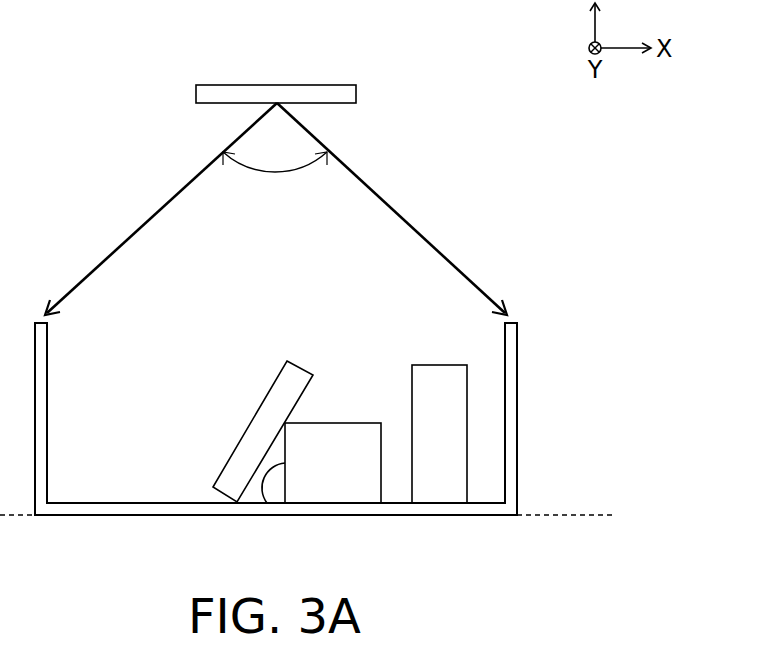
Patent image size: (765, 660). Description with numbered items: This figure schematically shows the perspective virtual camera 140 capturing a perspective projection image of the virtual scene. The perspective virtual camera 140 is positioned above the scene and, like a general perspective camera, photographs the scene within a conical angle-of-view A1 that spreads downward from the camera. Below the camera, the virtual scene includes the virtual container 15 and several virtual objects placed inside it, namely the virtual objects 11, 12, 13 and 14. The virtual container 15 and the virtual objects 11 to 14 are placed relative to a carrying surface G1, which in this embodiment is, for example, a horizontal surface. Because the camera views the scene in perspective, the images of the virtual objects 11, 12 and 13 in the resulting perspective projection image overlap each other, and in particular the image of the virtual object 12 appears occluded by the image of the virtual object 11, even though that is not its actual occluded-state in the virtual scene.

The perspective virtual camera 140 is at (340, 93).
The conical angle-of-view A1 is at (275, 180).
The virtual container 15 is at (510, 353).
The carrying surface G1 is at (590, 515).
The virtual object 11 is at (345, 472).
The virtual object 12 is at (437, 465).
The virtual object 13 is at (248, 455).
The virtual object 14 is at (278, 483).